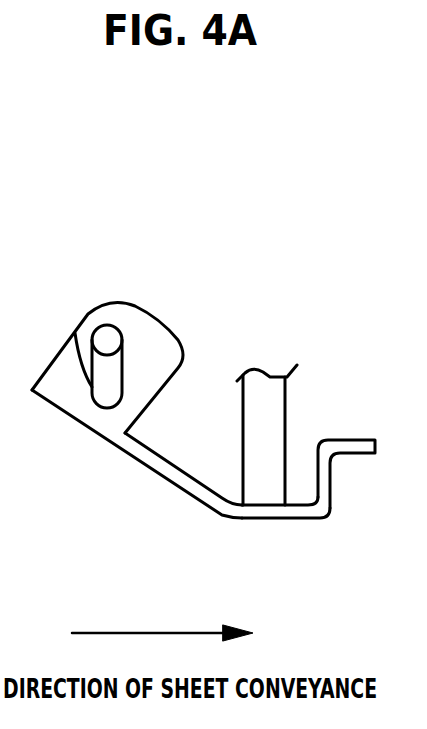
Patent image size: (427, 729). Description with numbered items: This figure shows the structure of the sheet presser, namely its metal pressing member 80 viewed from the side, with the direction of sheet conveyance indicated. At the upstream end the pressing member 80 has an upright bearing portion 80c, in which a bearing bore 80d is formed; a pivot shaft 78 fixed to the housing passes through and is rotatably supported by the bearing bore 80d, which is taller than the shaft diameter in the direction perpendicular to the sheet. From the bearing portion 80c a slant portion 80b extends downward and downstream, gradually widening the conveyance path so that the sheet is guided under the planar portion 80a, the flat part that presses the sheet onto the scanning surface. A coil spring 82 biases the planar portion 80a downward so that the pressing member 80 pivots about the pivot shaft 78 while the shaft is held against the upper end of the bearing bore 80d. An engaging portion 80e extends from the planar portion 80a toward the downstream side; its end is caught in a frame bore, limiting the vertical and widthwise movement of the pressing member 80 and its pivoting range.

The pivot shaft 78 is at (111, 331).
The pressing member 80 is at (201, 416).
The planar portion 80a is at (309, 513).
The slant portion 80b is at (158, 463).
The bearing portion 80c is at (152, 330).
The bearing bore 80d is at (112, 377).
The engaging portion 80e is at (347, 440).
The coil spring 82 is at (265, 448).